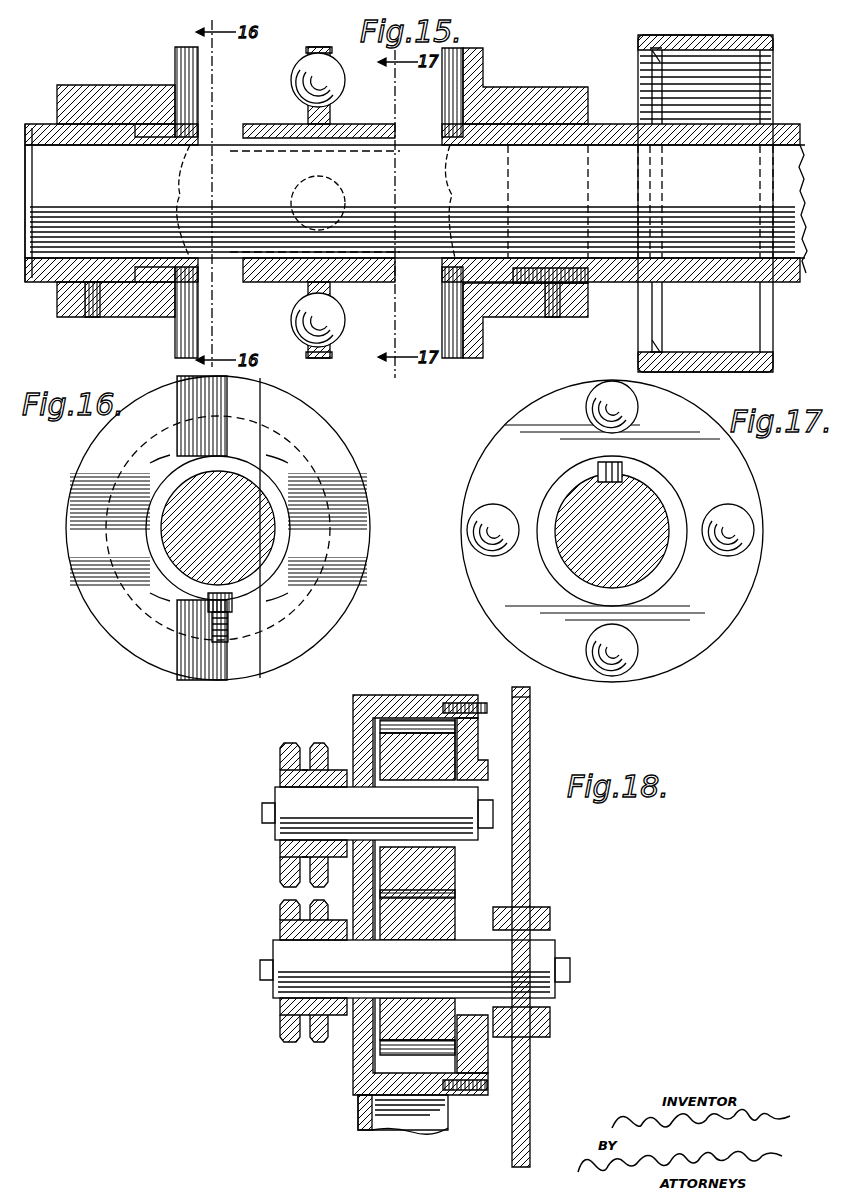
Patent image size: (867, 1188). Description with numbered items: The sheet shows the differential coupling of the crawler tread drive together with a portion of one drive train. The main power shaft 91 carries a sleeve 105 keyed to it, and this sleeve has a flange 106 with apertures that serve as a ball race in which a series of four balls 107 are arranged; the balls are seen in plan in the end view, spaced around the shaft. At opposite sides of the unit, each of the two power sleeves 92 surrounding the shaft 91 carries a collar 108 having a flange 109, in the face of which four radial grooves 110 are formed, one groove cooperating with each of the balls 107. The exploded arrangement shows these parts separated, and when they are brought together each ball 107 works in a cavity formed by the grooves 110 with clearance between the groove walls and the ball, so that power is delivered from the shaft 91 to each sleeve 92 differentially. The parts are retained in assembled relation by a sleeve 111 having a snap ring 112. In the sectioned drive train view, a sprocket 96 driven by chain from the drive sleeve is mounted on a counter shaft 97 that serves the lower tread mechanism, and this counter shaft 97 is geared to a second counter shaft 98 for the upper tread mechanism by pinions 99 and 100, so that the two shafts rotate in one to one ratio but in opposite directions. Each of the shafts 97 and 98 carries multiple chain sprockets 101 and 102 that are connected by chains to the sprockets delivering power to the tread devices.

In FIG. 15, the power shaft 91 is at (726, 183).
In FIG. 16, the power shaft 91 is at (240, 492).
In FIG. 17, the power shaft 91 is at (647, 547).
In FIG. 15, the sleeve 92 is at (38, 122).
In FIG. 16, the sleeve 92 is at (153, 542).
In FIG. 18, the sprocket 96 is at (525, 838).
In FIG. 18, the counter shaft 97 is at (450, 963).
In FIG. 18, the counter shaft 98 is at (422, 813).
In FIG. 18, the pinion 99 is at (397, 1048).
In FIG. 18, the pinion 100 is at (415, 737).
In FIG. 18, the multiple chain sprocket 101 is at (280, 921).
In FIG. 18, the multiple chain sprocket 102 is at (280, 771).
In FIG. 15, the sleeve 105 is at (275, 282).
In FIG. 17, the sleeve 105 is at (557, 568).
In FIG. 15, the flange 106 is at (330, 290).
In FIG. 17, the flange 106 is at (488, 438).
In FIG. 15, the ball 107 is at (291, 76).
In FIG. 17, the ball 107 is at (603, 392).
In FIG. 15, the collar 108 is at (100, 85).
In FIG. 16, the collar 108 is at (130, 608).
In FIG. 15, the flange 109 is at (160, 340).
In FIG. 16, the flange 109 is at (312, 623).
In FIG. 15, the radial groove 110 is at (186, 47).
In FIG. 16, the radial groove 110 is at (230, 402).
In FIG. 15, the sleeve 111 is at (638, 44).
In FIG. 15, the snap ring 112 is at (655, 352).